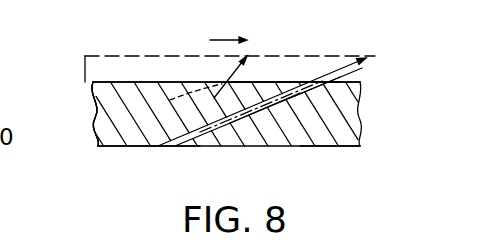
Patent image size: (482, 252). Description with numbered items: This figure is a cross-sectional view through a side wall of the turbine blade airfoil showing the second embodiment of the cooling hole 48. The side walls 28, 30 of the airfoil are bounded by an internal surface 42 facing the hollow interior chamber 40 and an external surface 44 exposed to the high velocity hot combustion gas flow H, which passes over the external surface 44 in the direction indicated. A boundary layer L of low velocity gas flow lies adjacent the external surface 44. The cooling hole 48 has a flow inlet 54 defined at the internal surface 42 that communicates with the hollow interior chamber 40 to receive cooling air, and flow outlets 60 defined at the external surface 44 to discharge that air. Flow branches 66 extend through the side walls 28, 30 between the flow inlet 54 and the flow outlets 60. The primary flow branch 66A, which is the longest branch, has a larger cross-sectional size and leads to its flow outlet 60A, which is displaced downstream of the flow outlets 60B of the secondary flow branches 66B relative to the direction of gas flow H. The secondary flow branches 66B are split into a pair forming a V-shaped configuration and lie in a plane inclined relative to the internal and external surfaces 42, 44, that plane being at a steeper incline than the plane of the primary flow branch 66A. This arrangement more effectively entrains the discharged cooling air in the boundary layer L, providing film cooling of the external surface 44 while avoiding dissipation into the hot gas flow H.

The side wall 28 is at (95, 130).
The side wall 30 is at (95, 130).
The hollow interior chamber 40 is at (245, 176).
The internal surface 42 is at (340, 146).
The external surface 44 is at (335, 82).
The cooling hole 48 is at (175, 75).
The flow inlet 54 is at (183, 148).
The flow outlets 60 is at (259, 50).
The flow outlet of primary flow branch 60A is at (305, 82).
The flow outlets of secondary flow branches 60B is at (221, 81).
The flow branches 66 is at (274, 127).
The primary flow branch 66A is at (300, 93).
The secondary flow branches 66B is at (123, 148).
The boundary layer L is at (84, 70).
The hot combustion gas flow H is at (216, 35).